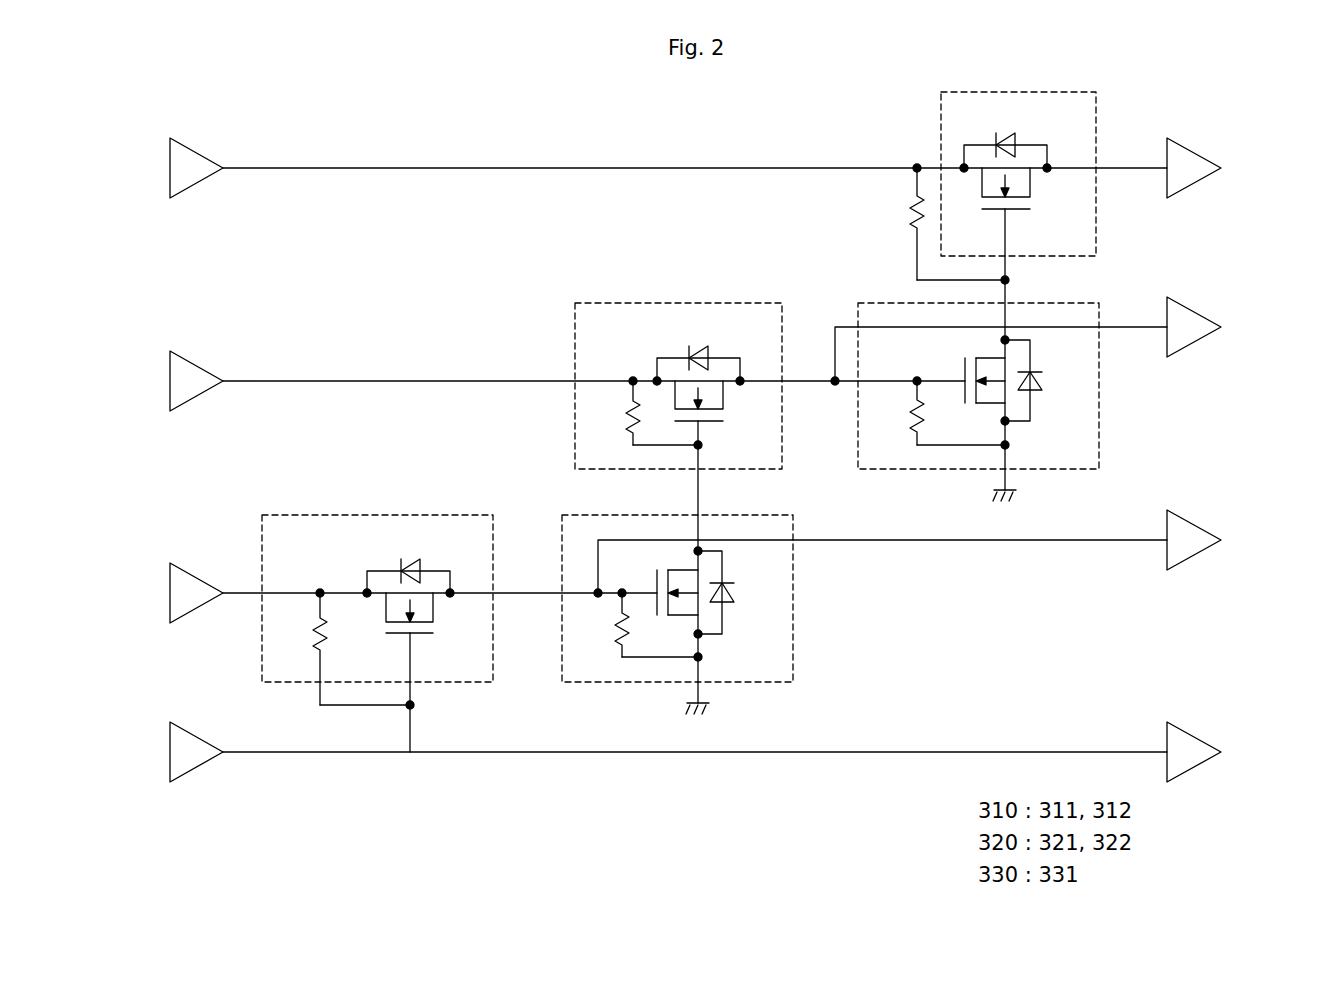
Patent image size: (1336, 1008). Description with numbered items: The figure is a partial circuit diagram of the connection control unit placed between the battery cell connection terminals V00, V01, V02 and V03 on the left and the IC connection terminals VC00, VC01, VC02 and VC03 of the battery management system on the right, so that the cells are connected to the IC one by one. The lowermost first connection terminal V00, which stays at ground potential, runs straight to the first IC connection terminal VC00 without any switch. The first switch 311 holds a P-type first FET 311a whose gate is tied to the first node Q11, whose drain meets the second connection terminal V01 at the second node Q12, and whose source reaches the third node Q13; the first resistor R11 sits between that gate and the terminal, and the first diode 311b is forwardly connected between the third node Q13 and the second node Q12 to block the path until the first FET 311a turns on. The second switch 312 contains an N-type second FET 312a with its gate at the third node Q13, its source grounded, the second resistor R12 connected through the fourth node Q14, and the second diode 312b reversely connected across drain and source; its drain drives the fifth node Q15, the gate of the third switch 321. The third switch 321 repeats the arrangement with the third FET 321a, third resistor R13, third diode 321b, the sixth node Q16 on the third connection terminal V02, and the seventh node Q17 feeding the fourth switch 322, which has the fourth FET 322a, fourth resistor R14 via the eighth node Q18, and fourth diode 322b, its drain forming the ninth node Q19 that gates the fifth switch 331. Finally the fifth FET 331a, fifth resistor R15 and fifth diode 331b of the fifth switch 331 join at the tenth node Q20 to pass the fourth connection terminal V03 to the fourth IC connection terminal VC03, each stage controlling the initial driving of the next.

The first switch 311 is at (440, 515).
The second switch 312 is at (797, 641).
The third switch 321 is at (724, 303).
The fourth switch 322 is at (1101, 430).
The fifth switch 331 is at (1098, 111).
The first FET 311a is at (438, 649).
The first diode 311b is at (408, 565).
The second FET 312a is at (671, 597).
The second diode 312b is at (744, 592).
The third FET 321a is at (727, 413).
The third diode 321b is at (698, 353).
The fourth FET 322a is at (978, 384).
The fourth diode 322b is at (1051, 380).
The fifth FET 331a is at (1036, 224).
The fifth diode 331b is at (1005, 139).
The first resistor R11 is at (300, 649).
The second resistor R12 is at (602, 623).
The third resistor R13 is at (613, 413).
The fourth resistor R14 is at (896, 411).
The fifth resistor R15 is at (895, 224).
The first node Q11 is at (433, 706).
The second node Q12 is at (319, 580).
The third node Q13 is at (552, 581).
The fourth node Q14 is at (722, 660).
The fifth node Q15 is at (722, 446).
The sixth node Q16 is at (633, 368).
The seventh node Q17 is at (814, 394).
The eighth node Q18 is at (1029, 446).
The ninth node Q19 is at (1029, 281).
The tenth node Q20 is at (916, 155).
The first connection terminal V00 is at (172, 752).
The second connection terminal V01 is at (172, 593).
The third connection terminal V02 is at (172, 381).
The fourth connection terminal V03 is at (172, 168).
The first IC connection terminal VC00 is at (1225, 752).
The second IC connection terminal VC01 is at (1225, 540).
The third IC connection terminal VC02 is at (1225, 327).
The fourth IC connection terminal VC03 is at (1225, 168).